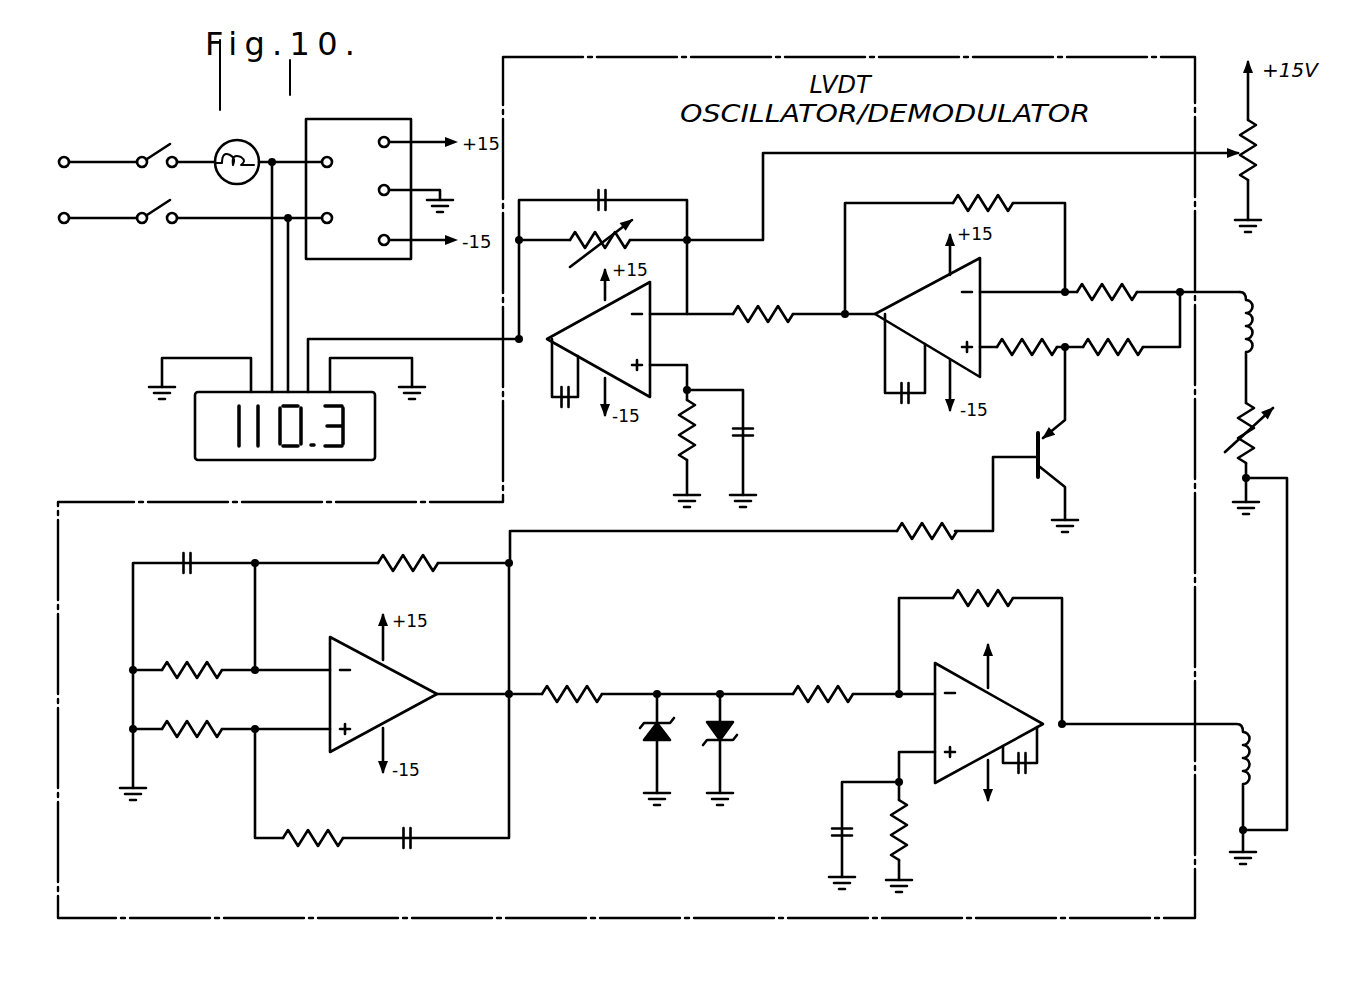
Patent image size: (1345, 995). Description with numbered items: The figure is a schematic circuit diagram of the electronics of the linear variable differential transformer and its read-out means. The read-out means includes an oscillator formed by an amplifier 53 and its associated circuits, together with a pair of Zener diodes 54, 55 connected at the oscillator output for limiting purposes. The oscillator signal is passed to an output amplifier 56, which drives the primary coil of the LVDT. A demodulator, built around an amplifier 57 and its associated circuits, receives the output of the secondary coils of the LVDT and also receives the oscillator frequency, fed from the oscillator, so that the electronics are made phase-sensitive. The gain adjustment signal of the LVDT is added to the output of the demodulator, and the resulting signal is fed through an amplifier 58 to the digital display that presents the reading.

The amplifier 53 is at (412, 712).
The Zener diode 54 is at (645, 730).
The Zener diode 55 is at (732, 723).
The output amplifier 56 is at (954, 668).
The amplifier 57 is at (910, 303).
The amplifier 58 is at (578, 327).